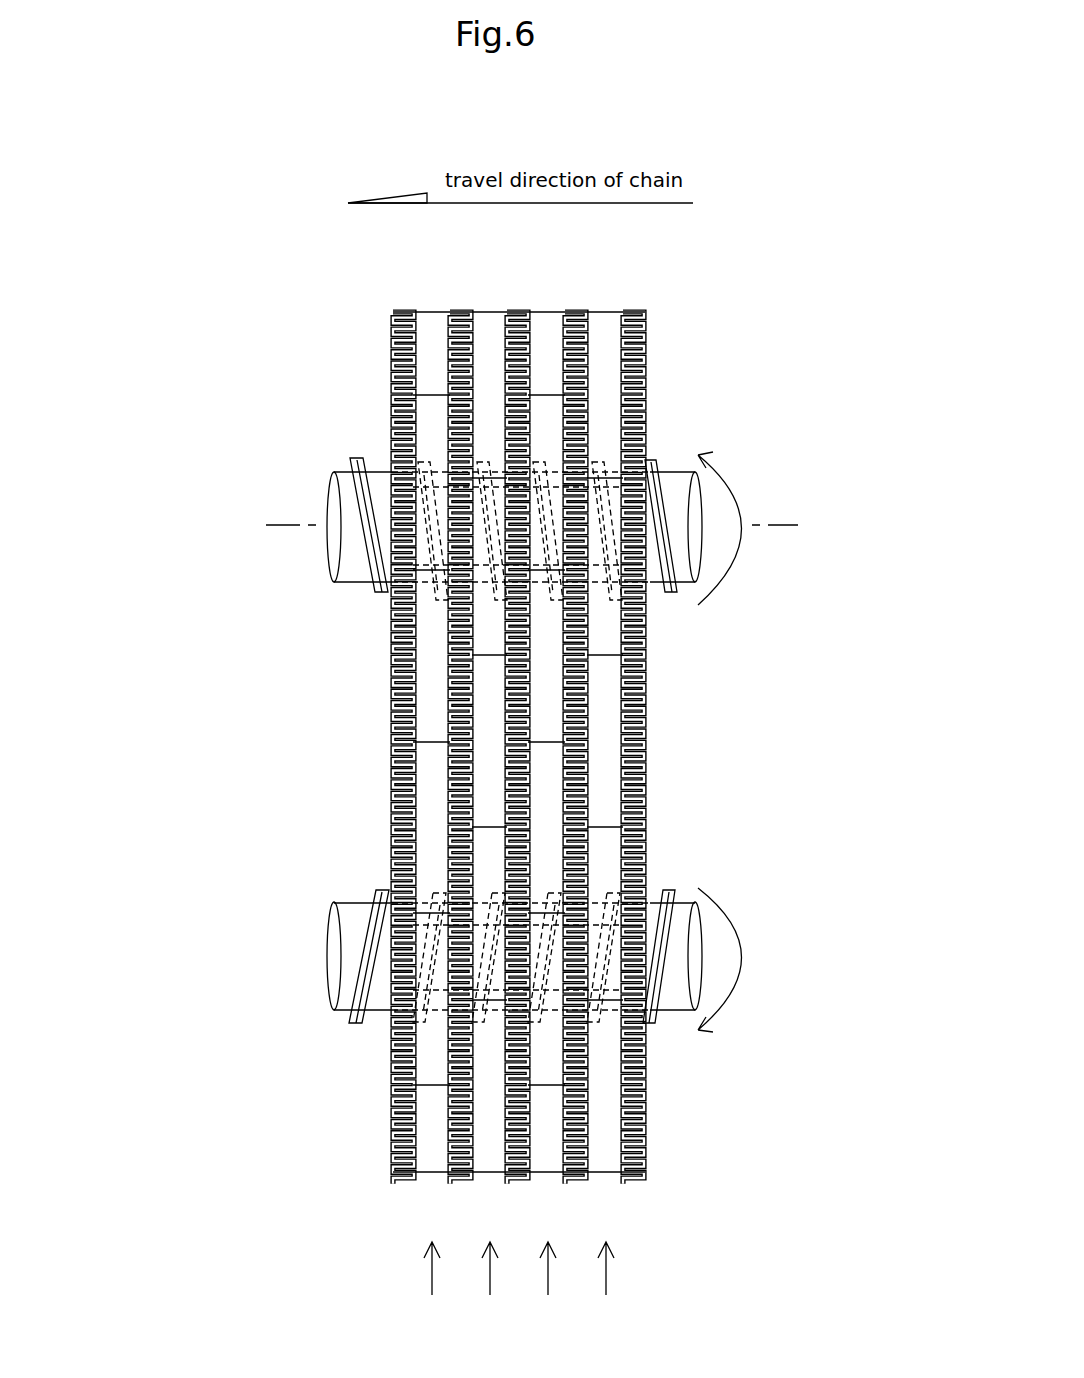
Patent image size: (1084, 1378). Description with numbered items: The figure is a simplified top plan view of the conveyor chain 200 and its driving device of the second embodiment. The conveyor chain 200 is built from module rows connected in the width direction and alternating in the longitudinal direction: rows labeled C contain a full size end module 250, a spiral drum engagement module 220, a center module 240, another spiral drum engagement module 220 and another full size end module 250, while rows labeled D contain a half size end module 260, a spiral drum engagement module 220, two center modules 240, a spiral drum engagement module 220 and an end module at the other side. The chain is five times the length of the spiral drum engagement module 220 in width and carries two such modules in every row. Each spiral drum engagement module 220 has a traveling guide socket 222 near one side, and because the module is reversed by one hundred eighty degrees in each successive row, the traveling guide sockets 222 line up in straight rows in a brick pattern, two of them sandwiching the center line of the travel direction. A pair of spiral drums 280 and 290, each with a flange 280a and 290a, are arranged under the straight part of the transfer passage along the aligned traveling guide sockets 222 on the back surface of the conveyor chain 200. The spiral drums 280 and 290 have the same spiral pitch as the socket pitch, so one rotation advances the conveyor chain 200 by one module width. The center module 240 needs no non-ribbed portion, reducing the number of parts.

The conveyor chain 200 is at (588, 306).
The spiral drum engagement module 220 is at (428, 418).
The traveling guide socket 222 is at (642, 445).
The center module 240 is at (428, 778).
The full size end module 250 is at (486, 312).
The half size end module 260 is at (427, 312).
The spiral drum 280 is at (342, 565).
The spiral drum flange 280a is at (360, 462).
The spiral drum 290 is at (337, 977).
The spiral drum flange 290a is at (378, 893).